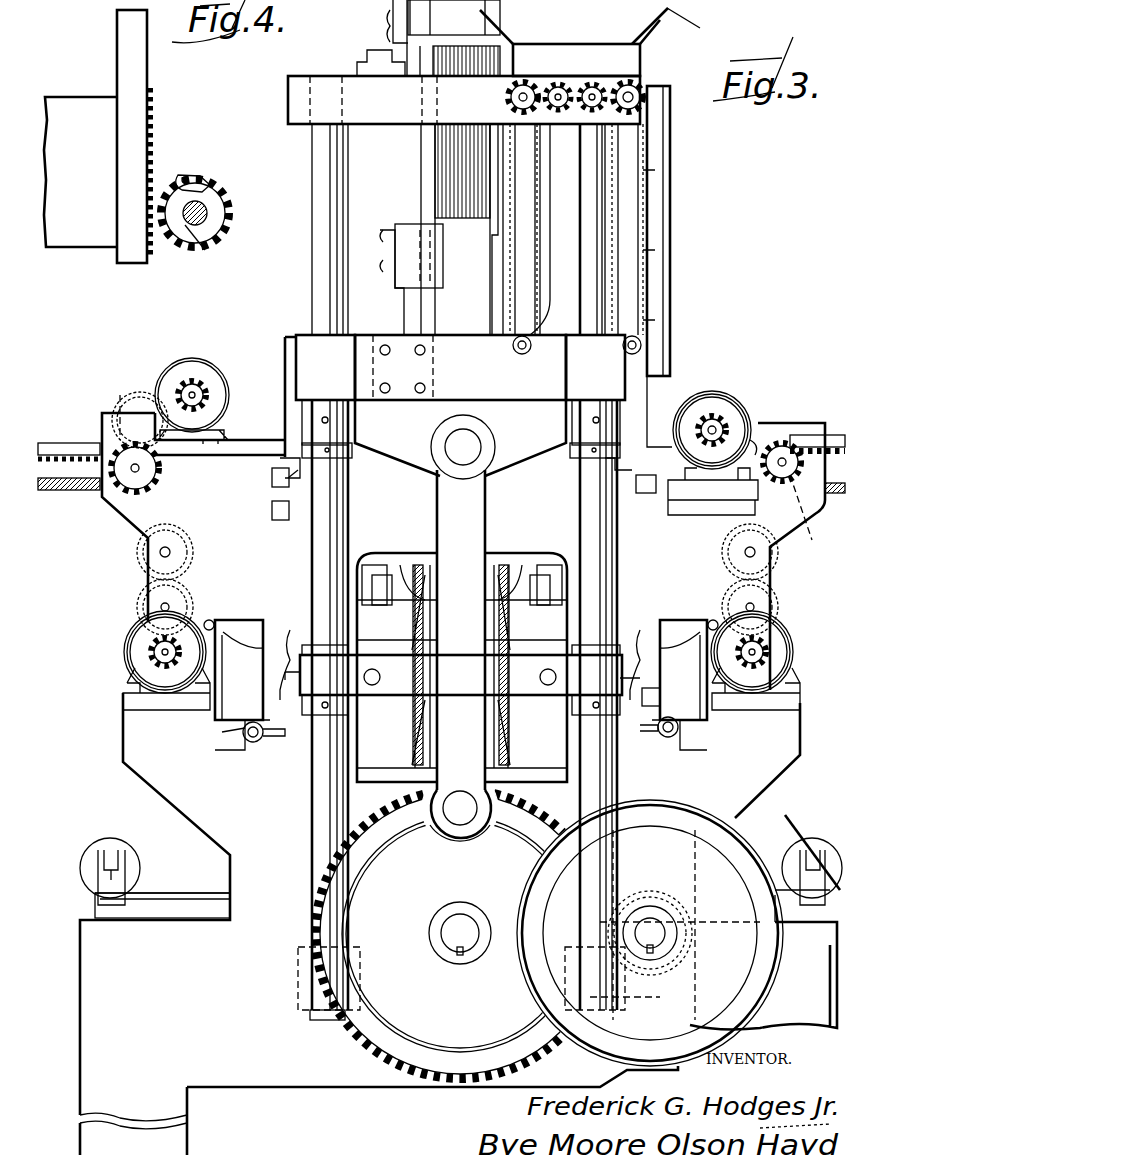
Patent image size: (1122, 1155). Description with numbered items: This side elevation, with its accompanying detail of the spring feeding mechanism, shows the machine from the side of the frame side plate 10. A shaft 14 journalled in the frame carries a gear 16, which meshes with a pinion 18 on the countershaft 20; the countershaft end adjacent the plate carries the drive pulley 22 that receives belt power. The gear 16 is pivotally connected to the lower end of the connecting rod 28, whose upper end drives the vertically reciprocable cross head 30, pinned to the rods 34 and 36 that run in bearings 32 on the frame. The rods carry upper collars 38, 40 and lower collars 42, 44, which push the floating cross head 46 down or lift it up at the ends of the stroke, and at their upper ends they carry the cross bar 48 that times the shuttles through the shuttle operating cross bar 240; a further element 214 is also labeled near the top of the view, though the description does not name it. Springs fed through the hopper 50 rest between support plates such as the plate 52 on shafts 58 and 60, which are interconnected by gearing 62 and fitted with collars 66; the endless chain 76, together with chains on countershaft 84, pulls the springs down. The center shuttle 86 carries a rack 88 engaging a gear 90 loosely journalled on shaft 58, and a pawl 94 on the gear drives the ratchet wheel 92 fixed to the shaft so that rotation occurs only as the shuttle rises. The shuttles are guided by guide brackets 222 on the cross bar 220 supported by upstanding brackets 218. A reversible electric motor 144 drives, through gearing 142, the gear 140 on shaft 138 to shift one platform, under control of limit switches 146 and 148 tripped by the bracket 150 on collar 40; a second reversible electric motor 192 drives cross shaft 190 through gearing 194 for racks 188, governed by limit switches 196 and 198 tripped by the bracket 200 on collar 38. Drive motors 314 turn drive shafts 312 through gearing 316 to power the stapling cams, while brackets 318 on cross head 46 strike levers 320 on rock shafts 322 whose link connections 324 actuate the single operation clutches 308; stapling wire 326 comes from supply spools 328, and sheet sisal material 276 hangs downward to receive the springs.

In FIG. 3, the side plate 10 is at (108, 980).
In FIG. 3, the shaft 14 is at (453, 940).
In FIG. 3, the gear 16 is at (398, 1022).
In FIG. 3, the pinion 18 is at (652, 890).
In FIG. 3, the countershaft 20 is at (660, 936).
In FIG. 3, the drive pulley 22 is at (725, 985).
In FIG. 3, the connecting rod 28 is at (470, 532).
In FIG. 3, the cross head 30 is at (402, 448).
In FIG. 3, the bearing 32 is at (308, 345).
In FIG. 3, the rod 34 is at (320, 540).
In FIG. 3, the rod 36 is at (595, 558).
In FIG. 3, the upper collar 38 is at (348, 460).
In FIG. 3, the upper collar 40 is at (578, 458).
In FIG. 3, the lower collar 42 is at (300, 715).
In FIG. 3, the lower collar 44 is at (578, 702).
In FIG. 3, the floating cross head 46 is at (396, 688).
In FIG. 3, the cross bar 48 is at (288, 100).
In FIG. 3, the feeding hopper 50 is at (700, 16).
In FIG. 3, the support plate 52 is at (640, 62).
In FIG. 4, the shaft 58 is at (204, 212).
In FIG. 3, the shaft 58 is at (508, 99).
In FIG. 3, the shaft 60 is at (645, 116).
In FIG. 3, the gearing 62 is at (565, 90).
In FIG. 3, the collar 66 is at (505, 22).
In FIG. 3, the endless chain 76 is at (670, 192).
In FIG. 3, the countershaft 84 is at (520, 355).
In FIG. 4, the center shuttle 86 is at (125, 62).
In FIG. 4, the rack 88 is at (150, 128).
In FIG. 4, the gear 90 is at (218, 226).
In FIG. 4, the ratchet wheel 92 is at (200, 250).
In FIG. 4, the pawl 94 is at (192, 186).
In FIG. 3, the shaft 138 is at (784, 445).
In FIG. 3, the gear 140 is at (815, 515).
In FIG. 3, the gearing 142 is at (725, 418).
In FIG. 3, the reversible electric motor 144 is at (710, 400).
In FIG. 3, the limit switch 146 is at (648, 496).
In FIG. 3, the limit switch 148 is at (640, 708).
In FIG. 3, the bracket 150 is at (615, 478).
In FIG. 3, the rack 188 is at (68, 443).
In FIG. 3, the cross shaft 190 is at (142, 478).
In FIG. 3, the reversible electric motor 192 is at (198, 362).
In FIG. 3, the gearing 194 is at (152, 400).
In FIG. 3, the limit switch 196 is at (272, 480).
In FIG. 3, the limit switch 198 is at (272, 514).
In FIG. 3, the bracket 200 is at (300, 480).
In FIG. 3, the block 214 is at (376, 17).
In FIG. 3, the upstanding bracket 218 is at (390, 296).
In FIG. 3, the cross bar 220 is at (395, 260).
In FIG. 3, the guide bracket 222 is at (446, 252).
In FIG. 3, the shuttle operating cross bar 240 is at (393, 30).
In FIG. 3, the sheet sisal material 276 is at (78, 492).
In FIG. 3, the single operation clutch 308 is at (243, 620).
In FIG. 3, the drive shaft 312 is at (160, 554).
In FIG. 3, the drive motor 314 is at (138, 655).
In FIG. 3, the gearing 316 is at (140, 606).
In FIG. 3, the bracket 318 is at (465, 644).
In FIG. 3, the lever 320 is at (275, 738).
In FIG. 3, the rock shaft 322 is at (250, 745).
In FIG. 3, the link connection 324 is at (223, 712).
In FIG. 3, the stapling wire 326 is at (185, 893).
In FIG. 3, the supply spool 328 is at (94, 850).